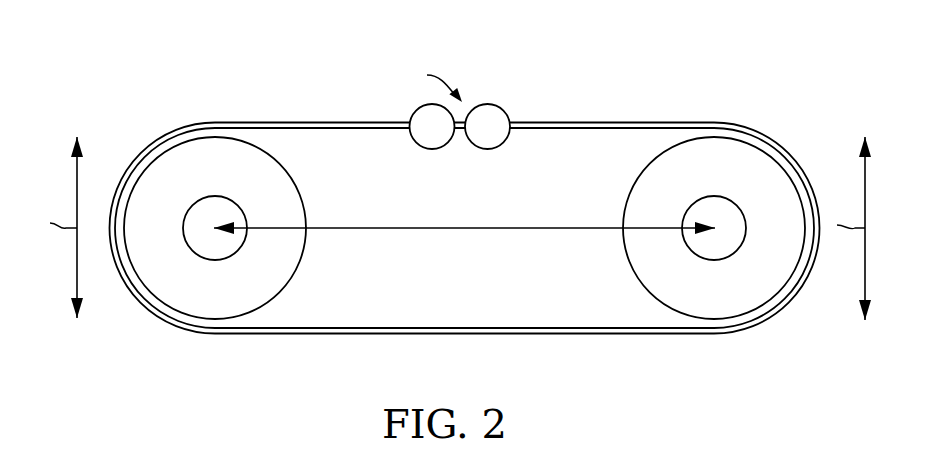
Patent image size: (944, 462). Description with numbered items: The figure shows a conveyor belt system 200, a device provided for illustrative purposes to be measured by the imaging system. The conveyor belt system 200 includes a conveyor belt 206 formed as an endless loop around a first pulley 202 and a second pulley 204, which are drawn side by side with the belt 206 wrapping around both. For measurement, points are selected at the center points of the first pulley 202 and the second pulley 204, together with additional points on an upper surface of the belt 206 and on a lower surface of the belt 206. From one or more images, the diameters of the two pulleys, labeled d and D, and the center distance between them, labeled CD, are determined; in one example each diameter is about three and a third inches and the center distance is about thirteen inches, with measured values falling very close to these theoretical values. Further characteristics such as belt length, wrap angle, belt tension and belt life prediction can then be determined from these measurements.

The conveyor belt system 200 is at (107, 44).
The first pulley 202 is at (150, 328).
The second pulley 204 is at (650, 339).
The conveyor belt 206 is at (575, 122).